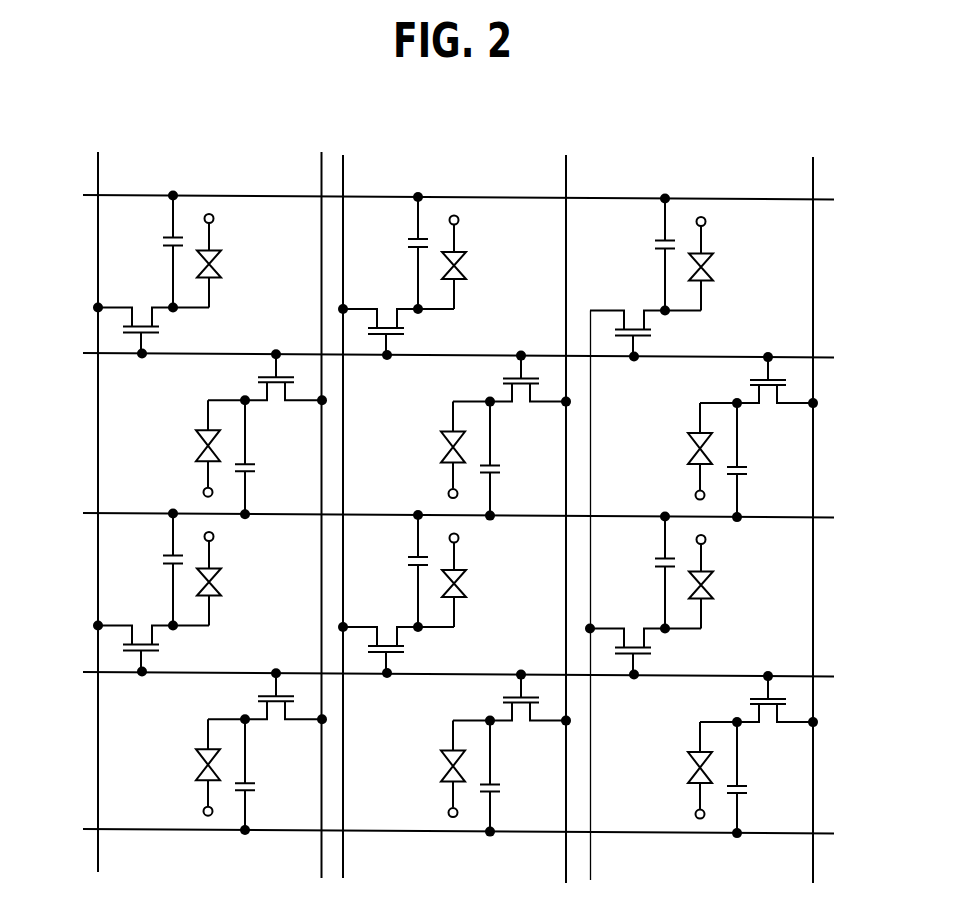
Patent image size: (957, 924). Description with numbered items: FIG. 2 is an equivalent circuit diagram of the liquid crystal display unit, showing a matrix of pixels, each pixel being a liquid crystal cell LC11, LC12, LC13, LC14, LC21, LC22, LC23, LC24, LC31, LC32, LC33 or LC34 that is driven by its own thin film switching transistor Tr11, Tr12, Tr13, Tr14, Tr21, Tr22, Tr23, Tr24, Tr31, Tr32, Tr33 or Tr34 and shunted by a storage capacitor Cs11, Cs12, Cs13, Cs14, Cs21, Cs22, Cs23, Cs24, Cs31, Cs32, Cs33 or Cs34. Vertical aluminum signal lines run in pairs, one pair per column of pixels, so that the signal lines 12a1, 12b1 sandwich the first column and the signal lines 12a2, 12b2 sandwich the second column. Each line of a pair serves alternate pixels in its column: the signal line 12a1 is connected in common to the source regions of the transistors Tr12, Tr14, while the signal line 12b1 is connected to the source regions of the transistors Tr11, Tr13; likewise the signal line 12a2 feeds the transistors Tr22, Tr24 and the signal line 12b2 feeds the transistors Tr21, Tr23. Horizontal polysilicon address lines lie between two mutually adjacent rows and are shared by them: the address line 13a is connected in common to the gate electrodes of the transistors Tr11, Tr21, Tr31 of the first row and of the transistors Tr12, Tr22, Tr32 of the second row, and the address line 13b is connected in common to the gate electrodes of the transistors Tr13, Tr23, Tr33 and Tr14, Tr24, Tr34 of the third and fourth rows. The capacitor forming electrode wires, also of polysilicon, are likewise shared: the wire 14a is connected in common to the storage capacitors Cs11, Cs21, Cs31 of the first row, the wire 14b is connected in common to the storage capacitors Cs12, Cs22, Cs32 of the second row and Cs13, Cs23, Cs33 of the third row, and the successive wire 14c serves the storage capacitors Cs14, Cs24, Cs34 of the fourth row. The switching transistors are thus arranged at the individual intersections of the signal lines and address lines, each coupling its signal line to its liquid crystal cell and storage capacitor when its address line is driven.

The signal line 12a1 is at (109, 499).
The signal line 12b1 is at (310, 502).
The signal line 12a2 is at (362, 502).
The signal line 12b2 is at (567, 504).
The capacitor forming electrode wire 14a is at (441, 195).
The address line 13a is at (440, 354).
The capacitor forming electrode wire 14b is at (441, 514).
The address line 13b is at (439, 672).
The capacitor forming electrode wire 14c is at (439, 830).
The switching transistor Tr11 is at (151, 331).
The switching transistor Tr12 is at (266, 377).
The switching transistor Tr13 is at (151, 649).
The switching transistor Tr14 is at (266, 696).
The switching transistor Tr21 is at (396, 332).
The switching transistor Tr22 is at (510, 379).
The switching transistor Tr23 is at (398, 650).
The switching transistor Tr24 is at (510, 698).
The switching transistor Tr31 is at (645, 336).
The switching transistor Tr32 is at (757, 380).
The switching transistor Tr33 is at (645, 652).
The switching transistor Tr34 is at (757, 699).
The storage capacitor Cs11 is at (150, 252).
The storage capacitor Cs12 is at (268, 457).
The storage capacitor Cs13 is at (147, 570).
The storage capacitor Cs14 is at (268, 774).
The storage capacitor Cs21 is at (392, 253).
The storage capacitor Cs22 is at (516, 459).
The storage capacitor Cs23 is at (390, 571).
The storage capacitor Cs24 is at (516, 776).
The storage capacitor Cs31 is at (639, 255).
The storage capacitor Cs32 is at (763, 460).
The storage capacitor Cs33 is at (637, 573).
The storage capacitor Cs34 is at (763, 777).
The liquid crystal cell LC11 is at (233, 261).
The liquid crystal cell LC12 is at (179, 448).
The liquid crystal cell LC13 is at (235, 579).
The liquid crystal cell LC14 is at (179, 767).
The liquid crystal cell LC21 is at (480, 263).
The liquid crystal cell LC22 is at (421, 450).
The liquid crystal cell LC23 is at (483, 581).
The liquid crystal cell LC24 is at (421, 769).
The liquid crystal cell LC31 is at (727, 264).
The liquid crystal cell LC32 is at (668, 451).
The liquid crystal cell LC33 is at (730, 582).
The liquid crystal cell LC34 is at (668, 770).